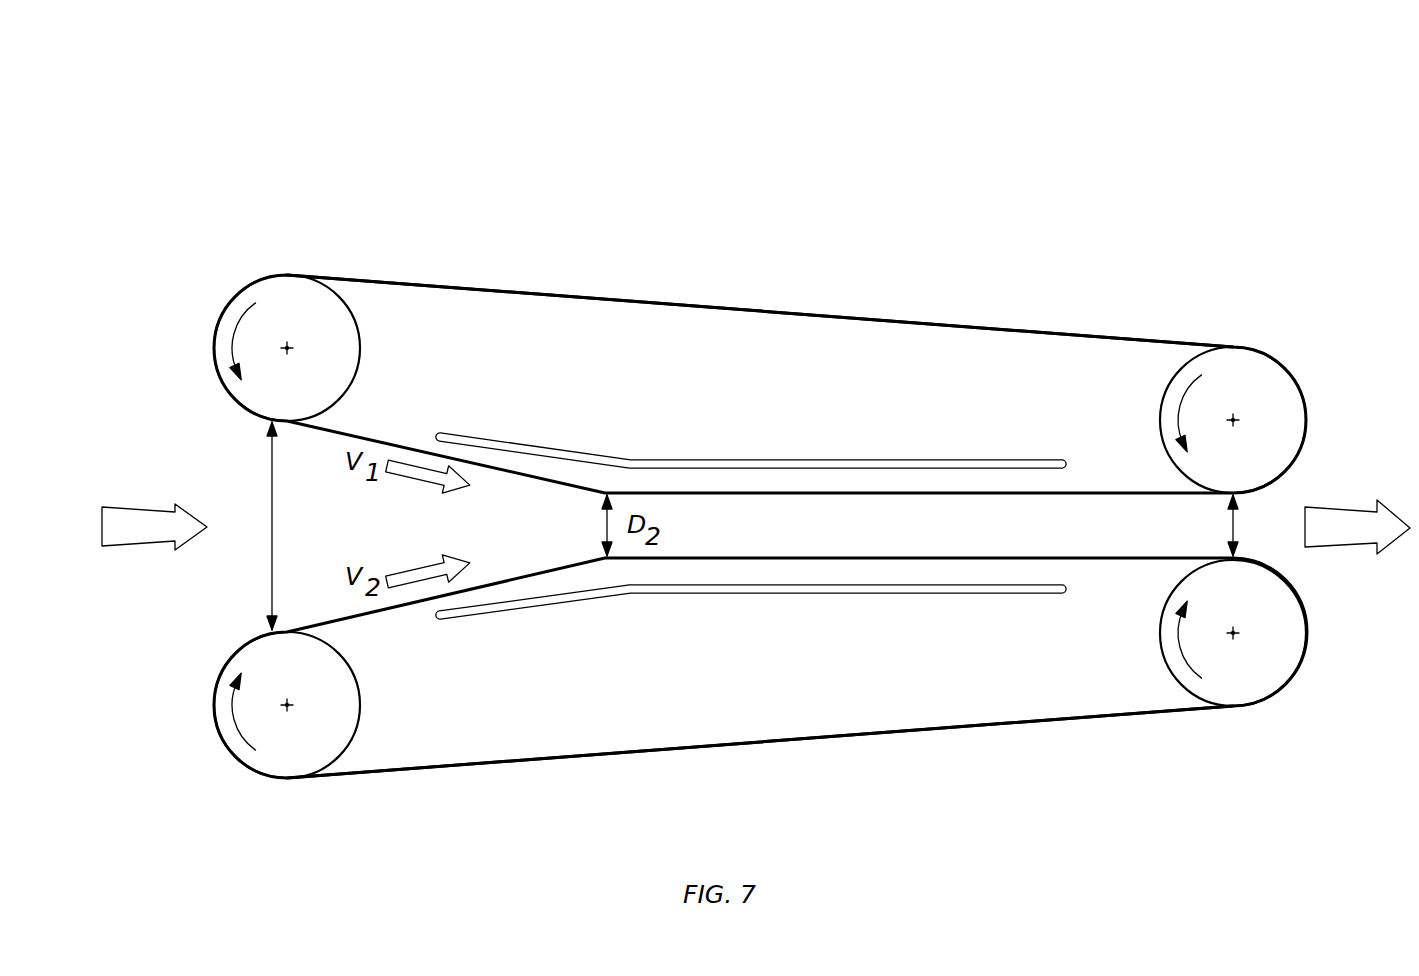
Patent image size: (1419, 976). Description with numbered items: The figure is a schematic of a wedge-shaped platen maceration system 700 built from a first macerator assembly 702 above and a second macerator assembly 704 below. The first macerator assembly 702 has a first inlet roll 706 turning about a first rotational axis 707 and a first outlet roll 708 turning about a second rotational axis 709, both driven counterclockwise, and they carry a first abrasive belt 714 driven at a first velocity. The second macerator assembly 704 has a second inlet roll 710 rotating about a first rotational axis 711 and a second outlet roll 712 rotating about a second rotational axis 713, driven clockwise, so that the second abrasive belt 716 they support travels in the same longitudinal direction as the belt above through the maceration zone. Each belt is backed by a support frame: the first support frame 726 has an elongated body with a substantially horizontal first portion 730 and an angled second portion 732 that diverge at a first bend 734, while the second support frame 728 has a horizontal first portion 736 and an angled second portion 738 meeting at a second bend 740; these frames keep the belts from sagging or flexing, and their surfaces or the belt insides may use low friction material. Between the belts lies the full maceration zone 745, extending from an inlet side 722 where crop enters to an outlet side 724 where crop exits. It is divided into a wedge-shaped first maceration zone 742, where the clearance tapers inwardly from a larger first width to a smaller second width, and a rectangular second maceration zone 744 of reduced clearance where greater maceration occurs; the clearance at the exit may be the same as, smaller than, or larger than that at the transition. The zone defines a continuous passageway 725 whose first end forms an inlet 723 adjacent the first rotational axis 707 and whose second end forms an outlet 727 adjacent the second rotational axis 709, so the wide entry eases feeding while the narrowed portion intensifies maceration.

The wedge-shaped platen maceration system 700 is at (185, 162).
The first macerator assembly 702 is at (413, 248).
The second macerator assembly 704 is at (413, 805).
The first inlet roll 706 is at (295, 348).
The first rotational axis 707 is at (290, 350).
The first outlet roll 708 is at (1213, 419).
The second rotational axis 709 is at (1236, 420).
The second inlet roll 710 is at (295, 705).
The first rotational axis 711 is at (290, 706).
The second outlet roll 712 is at (1214, 639).
The second rotational axis 713 is at (1236, 636).
The first abrasive belt 714 is at (661, 299).
The second abrasive belt 716 is at (663, 756).
The inlet side 722 is at (134, 507).
The inlet of the passageway 723 is at (263, 565).
The outlet side 724 is at (1341, 507).
The continuous passageway 725 is at (850, 522).
The first support frame 726 is at (676, 441).
The outlet of the passageway 727 is at (1250, 548).
The second support frame 728 is at (677, 612).
The substantially horizontal first portion 730 is at (866, 459).
The angled second portion 732 is at (517, 438).
The first bend 734 is at (633, 456).
The substantially horizontal first portion 736 is at (866, 595).
The angled second portion 738 is at (513, 612).
The second bend 740 is at (633, 597).
The first maceration zone 742 is at (549, 536).
The second maceration zone 744 is at (942, 523).
The full maceration zone 745 is at (180, 406).